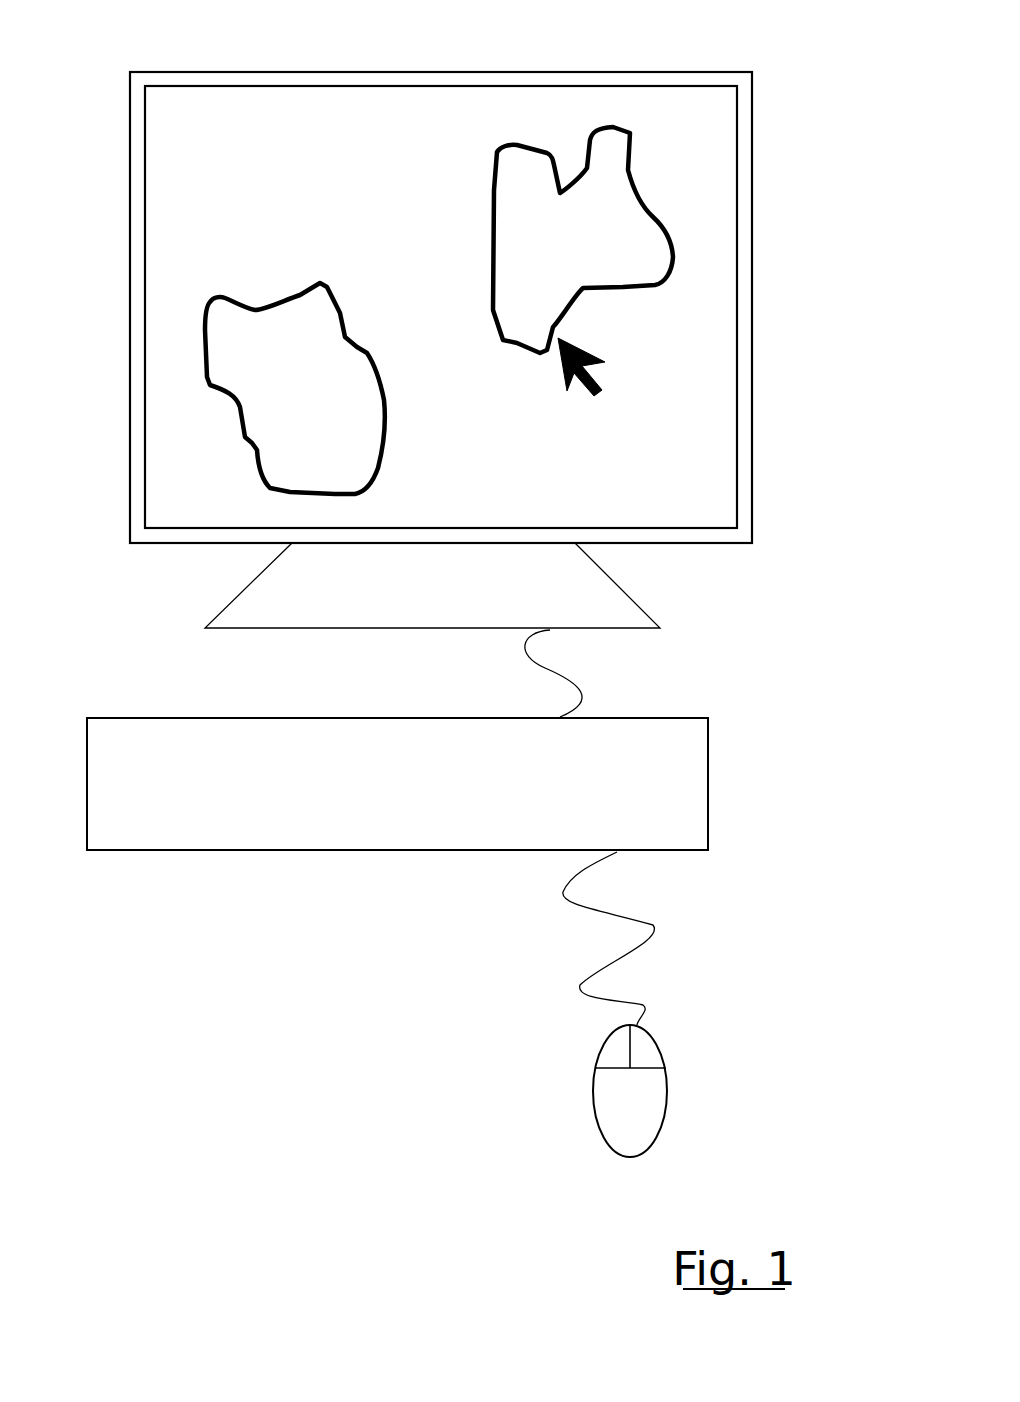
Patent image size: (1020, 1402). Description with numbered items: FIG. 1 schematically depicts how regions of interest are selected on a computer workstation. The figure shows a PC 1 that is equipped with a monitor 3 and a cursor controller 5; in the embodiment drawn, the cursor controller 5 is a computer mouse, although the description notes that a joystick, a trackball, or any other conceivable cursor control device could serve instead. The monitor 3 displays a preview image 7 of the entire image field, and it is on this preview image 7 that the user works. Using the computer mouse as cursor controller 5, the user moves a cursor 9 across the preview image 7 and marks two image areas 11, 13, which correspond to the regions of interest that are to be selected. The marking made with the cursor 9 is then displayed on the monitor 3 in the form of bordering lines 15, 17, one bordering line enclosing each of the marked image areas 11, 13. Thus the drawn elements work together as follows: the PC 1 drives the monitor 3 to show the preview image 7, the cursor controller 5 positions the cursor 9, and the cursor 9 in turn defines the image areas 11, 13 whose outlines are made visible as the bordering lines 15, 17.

The PC 1 is at (678, 805).
The monitor 3 is at (247, 602).
The cursor controller 5 is at (648, 1098).
The preview image 7 is at (721, 367).
The cursor 9 is at (593, 370).
The image area 11 is at (563, 176).
The image area 13 is at (349, 388).
The bordering line 15 is at (383, 393).
The bordering line 17 is at (527, 145).